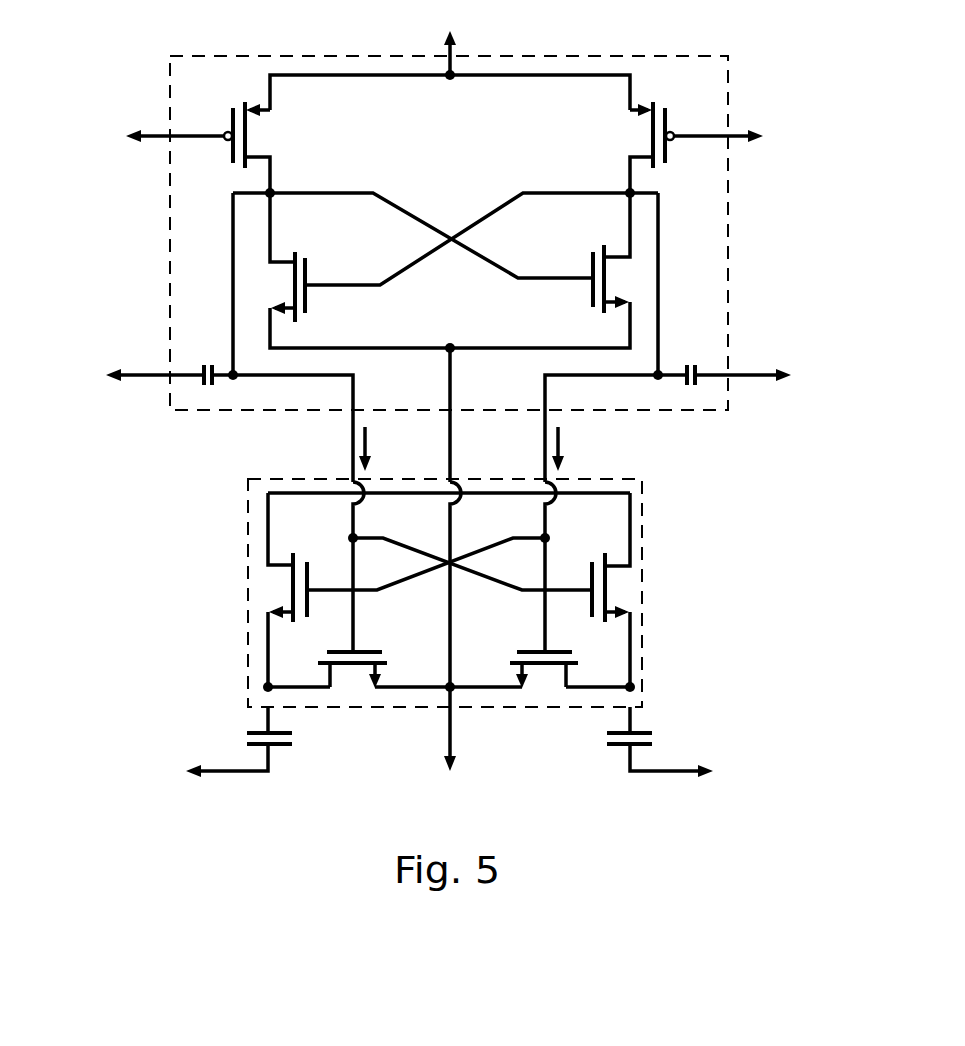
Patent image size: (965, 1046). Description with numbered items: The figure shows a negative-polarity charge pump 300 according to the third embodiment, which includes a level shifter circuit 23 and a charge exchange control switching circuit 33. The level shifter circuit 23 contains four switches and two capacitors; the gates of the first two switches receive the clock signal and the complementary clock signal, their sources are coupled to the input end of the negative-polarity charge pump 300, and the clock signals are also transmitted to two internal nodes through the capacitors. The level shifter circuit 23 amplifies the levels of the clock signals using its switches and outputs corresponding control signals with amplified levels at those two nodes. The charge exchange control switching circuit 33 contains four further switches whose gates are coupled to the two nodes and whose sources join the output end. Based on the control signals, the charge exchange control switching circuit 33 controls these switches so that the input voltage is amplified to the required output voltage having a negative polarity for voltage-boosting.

The negative-polarity charge pump 300 is at (820, 104).
The level shifter circuit 23 is at (728, 237).
The charge exchange control switching circuit 33 is at (642, 622).